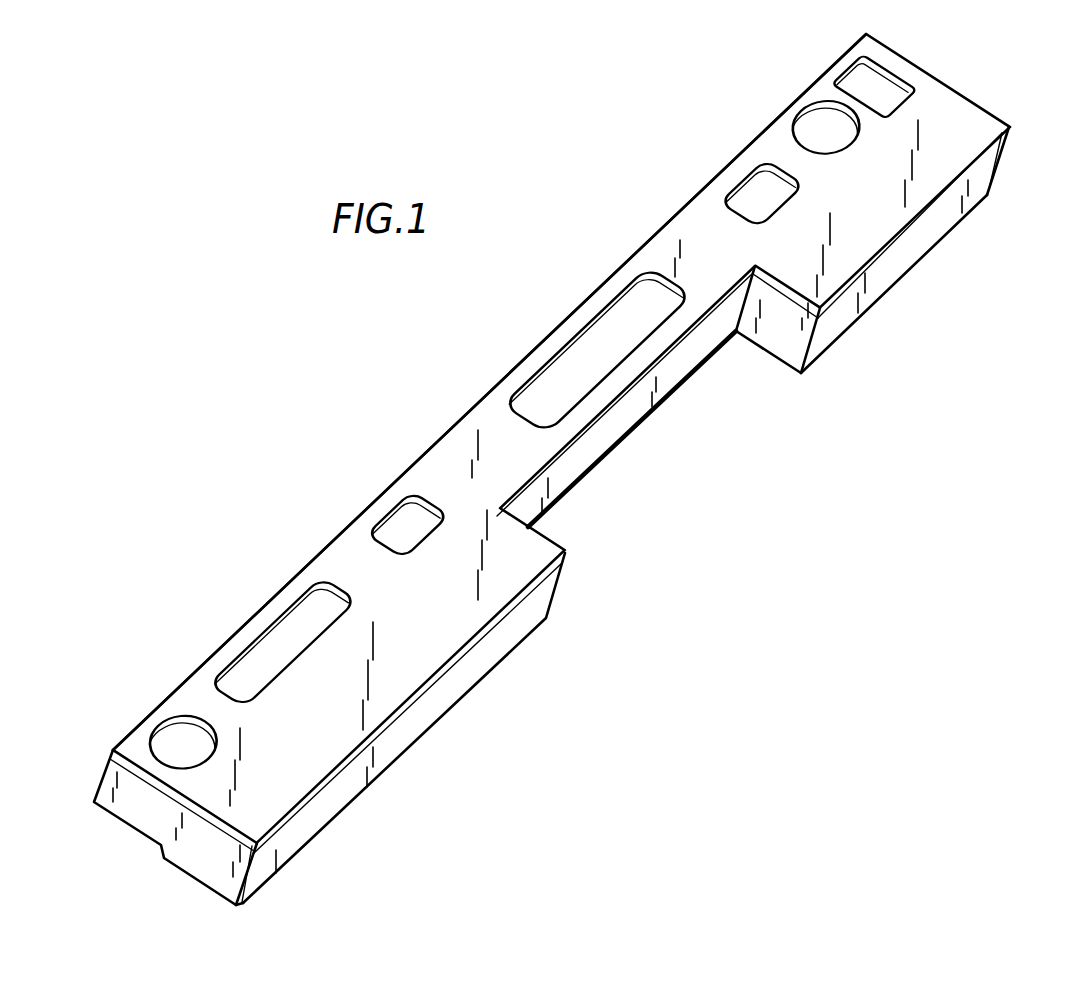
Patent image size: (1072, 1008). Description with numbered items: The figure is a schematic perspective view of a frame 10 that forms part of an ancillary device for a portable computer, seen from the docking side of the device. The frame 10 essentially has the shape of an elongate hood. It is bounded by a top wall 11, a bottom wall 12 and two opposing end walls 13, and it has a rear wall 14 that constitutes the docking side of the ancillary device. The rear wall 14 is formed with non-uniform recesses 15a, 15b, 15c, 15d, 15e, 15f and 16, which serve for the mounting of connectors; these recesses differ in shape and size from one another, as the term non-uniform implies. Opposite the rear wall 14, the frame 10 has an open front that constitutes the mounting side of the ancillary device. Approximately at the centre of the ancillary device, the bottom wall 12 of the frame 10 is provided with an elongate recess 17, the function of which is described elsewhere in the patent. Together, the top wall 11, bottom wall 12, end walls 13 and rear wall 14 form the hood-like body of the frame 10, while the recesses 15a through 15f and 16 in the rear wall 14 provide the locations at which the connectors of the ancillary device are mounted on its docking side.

The frame 10 is at (398, 425).
The top wall 11 is at (583, 300).
The bottom wall 12 is at (467, 682).
The end walls 13 is at (190, 863).
The rear wall 14 is at (668, 238).
The recess 15a is at (156, 735).
The recess 15b is at (266, 634).
The recess 15c is at (393, 518).
The recess 15d is at (748, 190).
The recess 15e is at (800, 118).
The recess 15f is at (857, 76).
The recess 16 is at (541, 372).
The elongate recess 17 is at (770, 340).